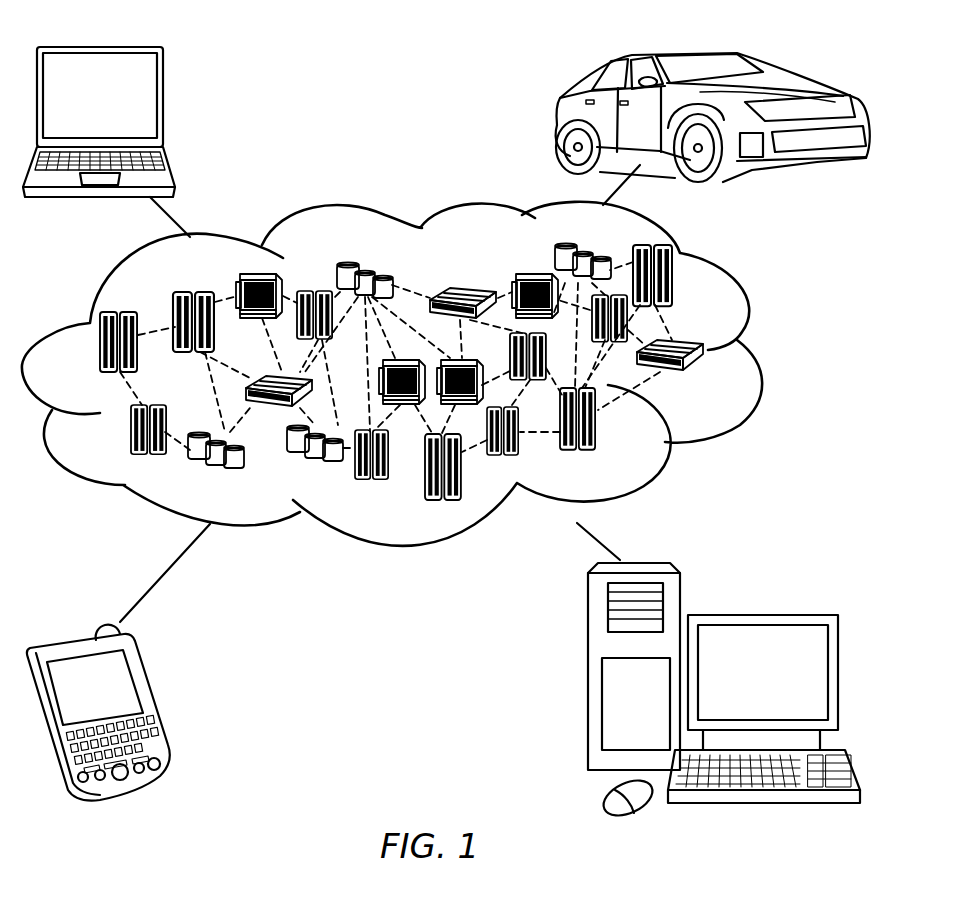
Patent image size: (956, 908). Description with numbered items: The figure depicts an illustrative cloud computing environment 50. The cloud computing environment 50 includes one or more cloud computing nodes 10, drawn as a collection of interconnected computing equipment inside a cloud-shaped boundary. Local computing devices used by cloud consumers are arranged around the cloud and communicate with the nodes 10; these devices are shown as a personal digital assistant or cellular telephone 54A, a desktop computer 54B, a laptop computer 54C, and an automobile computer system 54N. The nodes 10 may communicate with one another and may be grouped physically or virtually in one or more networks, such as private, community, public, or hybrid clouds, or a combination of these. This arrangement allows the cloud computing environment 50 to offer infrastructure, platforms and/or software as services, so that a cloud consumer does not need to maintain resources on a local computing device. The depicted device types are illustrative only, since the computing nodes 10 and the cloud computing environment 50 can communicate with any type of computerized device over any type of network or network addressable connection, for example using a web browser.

The cloud computing nodes 10 is at (714, 383).
The cloud computing environment 50 is at (755, 357).
The personal digital assistant (PDA) or cellular telephone 54A is at (150, 692).
The desktop computer 54B is at (760, 615).
The laptop computer 54C is at (163, 103).
The automobile computer system 54N is at (560, 118).